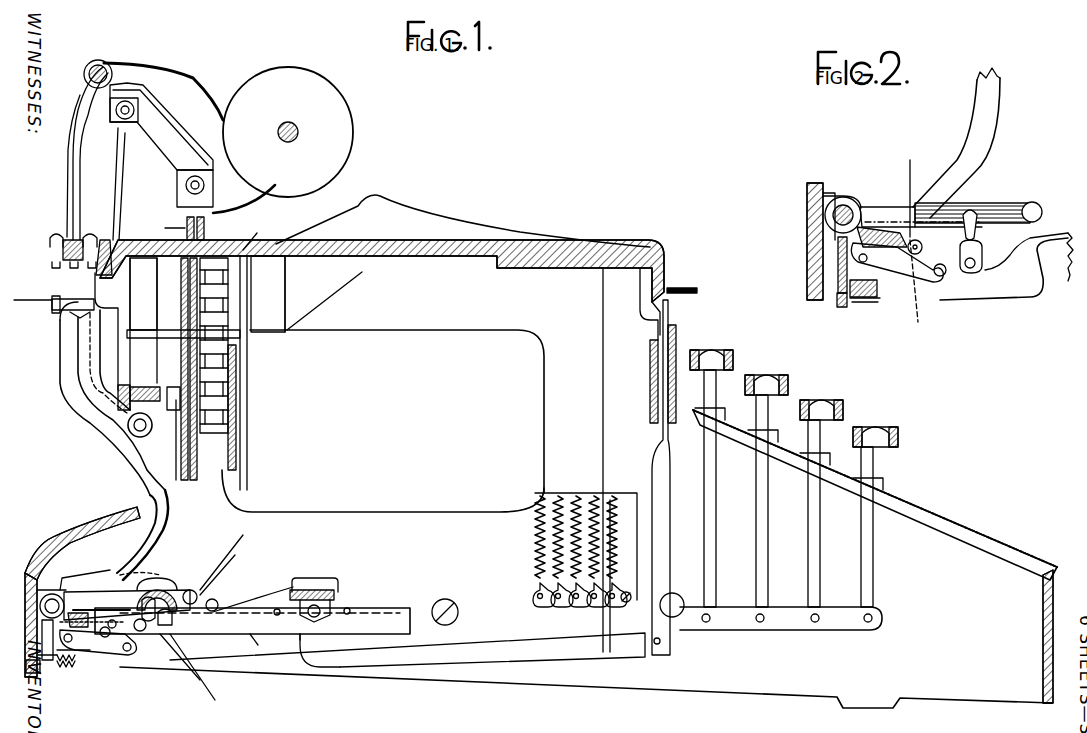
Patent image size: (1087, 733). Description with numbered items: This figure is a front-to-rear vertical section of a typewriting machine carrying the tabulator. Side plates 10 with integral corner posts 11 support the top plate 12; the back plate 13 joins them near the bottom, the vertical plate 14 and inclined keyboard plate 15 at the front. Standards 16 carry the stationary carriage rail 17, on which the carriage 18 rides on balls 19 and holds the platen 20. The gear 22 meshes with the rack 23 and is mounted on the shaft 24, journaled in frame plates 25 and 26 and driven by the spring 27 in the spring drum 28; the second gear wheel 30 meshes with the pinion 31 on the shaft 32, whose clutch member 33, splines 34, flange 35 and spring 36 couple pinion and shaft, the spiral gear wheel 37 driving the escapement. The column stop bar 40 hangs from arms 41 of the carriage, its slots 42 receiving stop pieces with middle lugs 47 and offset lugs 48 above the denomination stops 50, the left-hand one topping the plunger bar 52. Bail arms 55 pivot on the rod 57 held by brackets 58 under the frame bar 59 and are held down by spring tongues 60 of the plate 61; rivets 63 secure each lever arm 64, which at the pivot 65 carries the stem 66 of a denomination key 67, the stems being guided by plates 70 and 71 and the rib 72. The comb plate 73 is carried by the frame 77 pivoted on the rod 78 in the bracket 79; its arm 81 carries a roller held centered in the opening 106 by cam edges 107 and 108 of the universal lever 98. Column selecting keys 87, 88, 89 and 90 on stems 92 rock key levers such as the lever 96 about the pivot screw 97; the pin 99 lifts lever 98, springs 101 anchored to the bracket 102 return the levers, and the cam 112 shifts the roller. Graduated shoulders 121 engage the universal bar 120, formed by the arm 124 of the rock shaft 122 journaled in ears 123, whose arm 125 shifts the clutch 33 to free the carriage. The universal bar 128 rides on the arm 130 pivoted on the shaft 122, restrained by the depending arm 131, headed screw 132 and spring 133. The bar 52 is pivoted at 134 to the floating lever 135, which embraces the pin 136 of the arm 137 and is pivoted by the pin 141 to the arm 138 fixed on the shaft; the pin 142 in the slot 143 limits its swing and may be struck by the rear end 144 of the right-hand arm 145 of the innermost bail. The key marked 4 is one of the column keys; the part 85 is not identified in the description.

In FIG. 1, the index bar 4 is at (26, 299).
In FIG. 1, the side plates 10 is at (360, 512).
In FIG. 1, the corner posts 11 is at (544, 390).
In FIG. 1, the top plate 12 is at (454, 260).
In FIG. 1, the back plate 13 is at (60, 538).
In FIG. 2, the back plate 13 is at (807, 206).
In FIG. 1, the vertical plate 14 is at (1043, 622).
In FIG. 1, the inclined keyboard plate 15 is at (920, 510).
In FIG. 1, the standards 16 is at (115, 183).
In FIG. 1, the stationary carriage rail 17 is at (165, 160).
In FIG. 1, the carriage 18 is at (182, 88).
In FIG. 1, the anti-friction balls 19 is at (120, 120).
In FIG. 1, the platen 20 is at (298, 70).
In FIG. 1, the large toothed gear 22 is at (205, 227).
In FIG. 1, the broad rack 23 is at (240, 207).
In FIG. 1, the shaft 24 is at (145, 330).
In FIG. 1, the frame plate 25 is at (118, 328).
In FIG. 1, the frame plate 26 is at (247, 298).
In FIG. 1, the spring 27 is at (240, 335).
In FIG. 1, the spring drum 28 is at (261, 232).
In FIG. 1, the second gear wheel 30 is at (162, 225).
In FIG. 1, the pinion 31 is at (187, 440).
In FIG. 1, the shaft 32 is at (123, 423).
In FIG. 1, the clutch member 33 is at (175, 392).
In FIG. 1, the splines 34 is at (148, 392).
In FIG. 1, the flange 35 is at (123, 390).
In FIG. 1, the spring 36 is at (200, 320).
In FIG. 1, the gear wheel 37 is at (238, 462).
In FIG. 1, the column stop bar 40 is at (66, 252).
In FIG. 1, the arms 41 is at (72, 168).
In FIG. 1, the vertical slots 42 is at (54, 236).
In FIG. 1, the stop lug 47 is at (115, 245).
In FIG. 1, the stop lug 48 is at (58, 268).
In FIG. 1, the denomination stops 50 is at (52, 304).
In FIG. 1, the plunger bar 52 is at (80, 410).
In FIG. 2, the plunger bar 52 is at (990, 128).
In FIG. 1, the arms 55 is at (230, 634).
In FIG. 1, the rod 57 is at (321, 650).
In FIG. 1, the brackets 58 is at (300, 638).
In FIG. 1, the frame bar 59 is at (330, 600).
In FIG. 1, the spring tongues 60 is at (278, 605).
In FIG. 1, the plate 61 is at (318, 578).
In FIG. 1, the rivets 63 is at (275, 608).
In FIG. 1, the lever arm 64 is at (580, 657).
In FIG. 1, the pivot 65 is at (661, 641).
In FIG. 1, the stem 66 is at (670, 456).
In FIG. 1, the denomination key 67 is at (672, 288).
In FIG. 1, the plate 70 is at (650, 375).
In FIG. 1, the plate 71 is at (676, 345).
In FIG. 1, the longitudinal rib 72 is at (652, 336).
In FIG. 1, the comb plate 73 is at (100, 300).
In FIG. 1, the frame 77 is at (66, 378).
In FIG. 1, the rod 78 is at (138, 433).
In FIG. 1, the bracket 79 is at (146, 320).
In FIG. 1, the arm 81 is at (159, 535).
In FIG. 1, the rack bar 85 is at (183, 285).
In FIG. 1, the column selecting key 87 is at (713, 352).
In FIG. 1, the column selecting key 88 is at (768, 376).
In FIG. 1, the column selecting key 89 is at (818, 401).
In FIG. 1, the column selecting key 90 is at (871, 428).
In FIG. 1, the stem 92 is at (704, 535).
In FIG. 1, the key lever 96 is at (832, 630).
In FIG. 1, the pivot screw 97 is at (445, 600).
In FIG. 1, the universal lever 98 is at (676, 595).
In FIG. 1, the pin 99 is at (218, 603).
In FIG. 1, the returning spring 101 is at (540, 530).
In FIG. 1, the bracket 102 is at (568, 493).
In FIG. 1, the opening 106 is at (150, 585).
In FIG. 1, the cam edge 107 is at (176, 600).
In FIG. 1, the cam edge 108 is at (106, 522).
In FIG. 1, the cam 112 is at (199, 665).
In FIG. 1, the universal bar 120 is at (236, 553).
In FIG. 2, the universal bar 120 is at (1042, 212).
In FIG. 1, the shoulders 121 is at (233, 567).
In FIG. 1, the rock shaft 122 is at (47, 593).
In FIG. 2, the rock shaft 122 is at (843, 197).
In FIG. 1, the ears 123 is at (40, 660).
In FIG. 2, the ears 123 is at (858, 196).
In FIG. 1, the arm 124 is at (191, 590).
In FIG. 2, the arm 124 is at (998, 203).
In FIG. 1, the arm 125 is at (62, 588).
In FIG. 1, the universal bar 128 is at (152, 620).
In FIG. 2, the universal bar 128 is at (970, 205).
In FIG. 1, the arm 130 is at (95, 605).
In FIG. 2, the arm 130 is at (888, 206).
In FIG. 1, the depending arm 131 is at (36, 673).
In FIG. 2, the depending arm 131 is at (843, 307).
In FIG. 1, the headed screw 132 is at (82, 652).
In FIG. 2, the headed screw 132 is at (877, 290).
In FIG. 1, the restoring spring 133 is at (62, 668).
In FIG. 2, the restoring spring 133 is at (868, 302).
In FIG. 1, the pivot 134 is at (75, 642).
In FIG. 2, the pivot 134 is at (838, 262).
In FIG. 1, the floating lever 135 is at (115, 630).
In FIG. 2, the floating lever 135 is at (928, 293).
In FIG. 1, the pin 136 is at (165, 628).
In FIG. 2, the pin 136 is at (982, 260).
In FIG. 1, the arm 137 is at (142, 632).
In FIG. 2, the arm 137 is at (982, 240).
In FIG. 1, the arm 138 is at (105, 640).
In FIG. 2, the arm 138 is at (853, 250).
In FIG. 1, the pin 141 is at (102, 620).
In FIG. 2, the pin 141 is at (914, 189).
In FIG. 2, the pin 142 is at (941, 278).
In FIG. 1, the slot 143 is at (100, 583).
In FIG. 2, the slot 143 is at (943, 260).
In FIG. 1, the rear end 144 is at (207, 680).
In FIG. 2, the rear end 144 is at (1000, 298).
In FIG. 1, the right-hand arm 145 is at (254, 651).